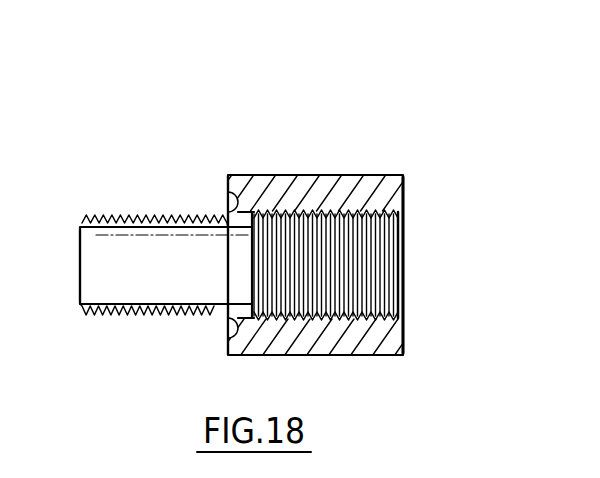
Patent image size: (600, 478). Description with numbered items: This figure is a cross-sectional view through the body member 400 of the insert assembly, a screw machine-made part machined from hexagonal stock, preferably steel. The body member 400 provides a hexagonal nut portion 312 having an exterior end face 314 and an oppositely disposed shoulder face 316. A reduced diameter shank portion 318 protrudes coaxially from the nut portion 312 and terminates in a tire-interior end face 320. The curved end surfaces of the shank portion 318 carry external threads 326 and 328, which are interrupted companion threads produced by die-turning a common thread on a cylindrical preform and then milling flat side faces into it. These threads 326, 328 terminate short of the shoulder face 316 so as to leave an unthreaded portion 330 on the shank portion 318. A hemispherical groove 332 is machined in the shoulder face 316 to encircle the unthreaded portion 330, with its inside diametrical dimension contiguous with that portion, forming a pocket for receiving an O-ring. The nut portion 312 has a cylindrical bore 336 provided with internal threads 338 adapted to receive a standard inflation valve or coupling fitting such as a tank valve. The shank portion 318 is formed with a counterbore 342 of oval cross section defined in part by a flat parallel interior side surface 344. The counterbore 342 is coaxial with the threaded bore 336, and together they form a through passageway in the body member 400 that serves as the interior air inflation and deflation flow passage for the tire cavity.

The hexagonal nut portion 312 is at (397, 177).
The exterior end face 314 is at (404, 201).
The shoulder face 316 is at (225, 176).
The shank portion 318 is at (128, 213).
The tire-interior end face 320 is at (80, 298).
The external thread 326 is at (157, 214).
The external thread 328 is at (157, 316).
The unthreaded portion 330 is at (208, 313).
The hemispherical groove 332 is at (228, 204).
The cylindrical bore 336 is at (386, 240).
The internal threads 338 is at (312, 212).
The counterbore 342 is at (111, 246).
The flat parallel interior side surface 344 is at (97, 283).
The body member 400 is at (289, 174).